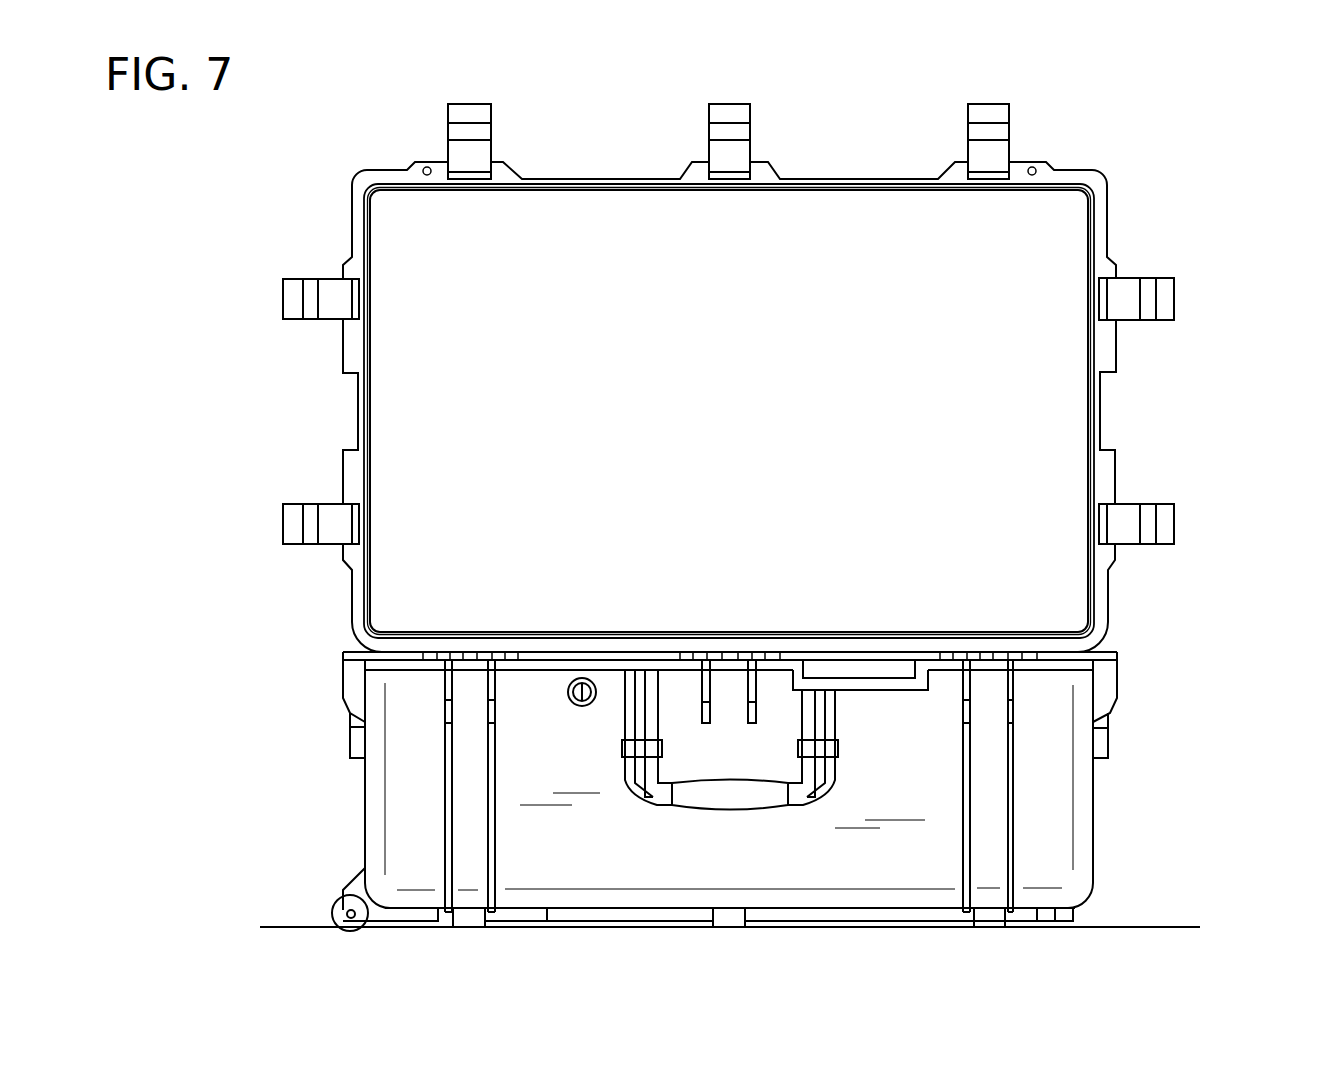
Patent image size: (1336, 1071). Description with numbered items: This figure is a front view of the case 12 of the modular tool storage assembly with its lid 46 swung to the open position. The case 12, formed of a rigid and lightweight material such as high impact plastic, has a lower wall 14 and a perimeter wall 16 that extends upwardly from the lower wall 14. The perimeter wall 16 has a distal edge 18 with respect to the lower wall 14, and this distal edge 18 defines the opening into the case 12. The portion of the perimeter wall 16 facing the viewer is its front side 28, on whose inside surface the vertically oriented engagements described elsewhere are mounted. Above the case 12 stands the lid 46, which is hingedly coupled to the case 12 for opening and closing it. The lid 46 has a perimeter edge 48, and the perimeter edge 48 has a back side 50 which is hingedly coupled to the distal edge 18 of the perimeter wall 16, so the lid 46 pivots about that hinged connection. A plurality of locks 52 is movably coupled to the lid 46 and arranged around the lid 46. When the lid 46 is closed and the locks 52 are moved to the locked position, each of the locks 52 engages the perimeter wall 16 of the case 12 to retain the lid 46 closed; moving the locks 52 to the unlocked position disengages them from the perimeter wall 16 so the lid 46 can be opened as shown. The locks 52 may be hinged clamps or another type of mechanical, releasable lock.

The case 12 is at (1093, 807).
The lower wall 14 is at (912, 922).
The perimeter wall 16 is at (400, 815).
The distal edge 18 is at (407, 658).
The front side 28 is at (802, 880).
The lid 46 is at (1100, 175).
The perimeter edge 48 is at (1115, 468).
The back side 50 is at (1057, 653).
The locks 52 is at (492, 118).